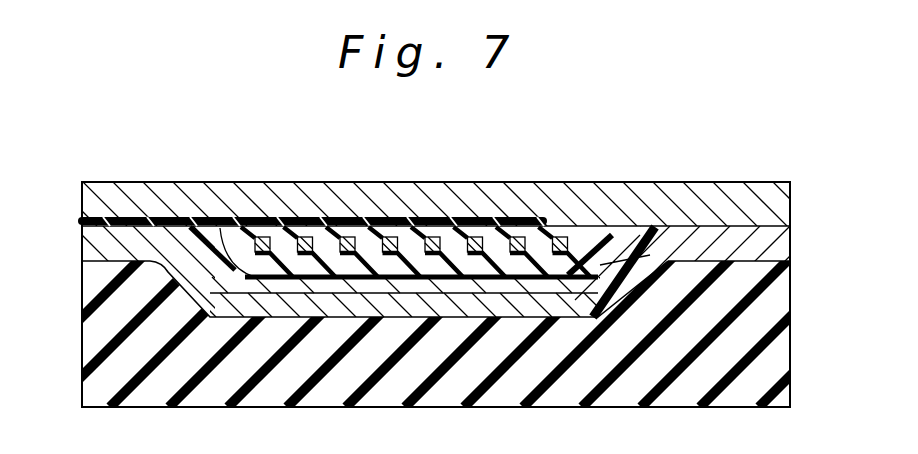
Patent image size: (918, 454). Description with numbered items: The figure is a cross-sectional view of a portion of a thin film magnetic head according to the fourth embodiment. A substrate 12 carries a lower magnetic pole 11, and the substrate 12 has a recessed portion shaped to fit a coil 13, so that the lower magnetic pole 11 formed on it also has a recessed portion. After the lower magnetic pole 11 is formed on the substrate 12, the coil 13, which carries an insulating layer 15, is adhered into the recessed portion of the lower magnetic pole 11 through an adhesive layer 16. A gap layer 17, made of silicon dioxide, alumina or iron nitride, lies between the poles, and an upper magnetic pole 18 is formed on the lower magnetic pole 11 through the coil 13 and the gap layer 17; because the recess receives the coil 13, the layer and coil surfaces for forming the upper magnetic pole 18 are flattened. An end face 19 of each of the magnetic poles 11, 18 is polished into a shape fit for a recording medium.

The lower magnetic pole 11 is at (776, 242).
The substrate 12 is at (776, 358).
The coil 13 is at (566, 240).
The insulating layer 15 is at (438, 233).
The adhesive layer 16 is at (633, 243).
The gap layer 17 is at (508, 222).
The upper magnetic pole 18 is at (777, 203).
The end face 19 is at (82, 284).